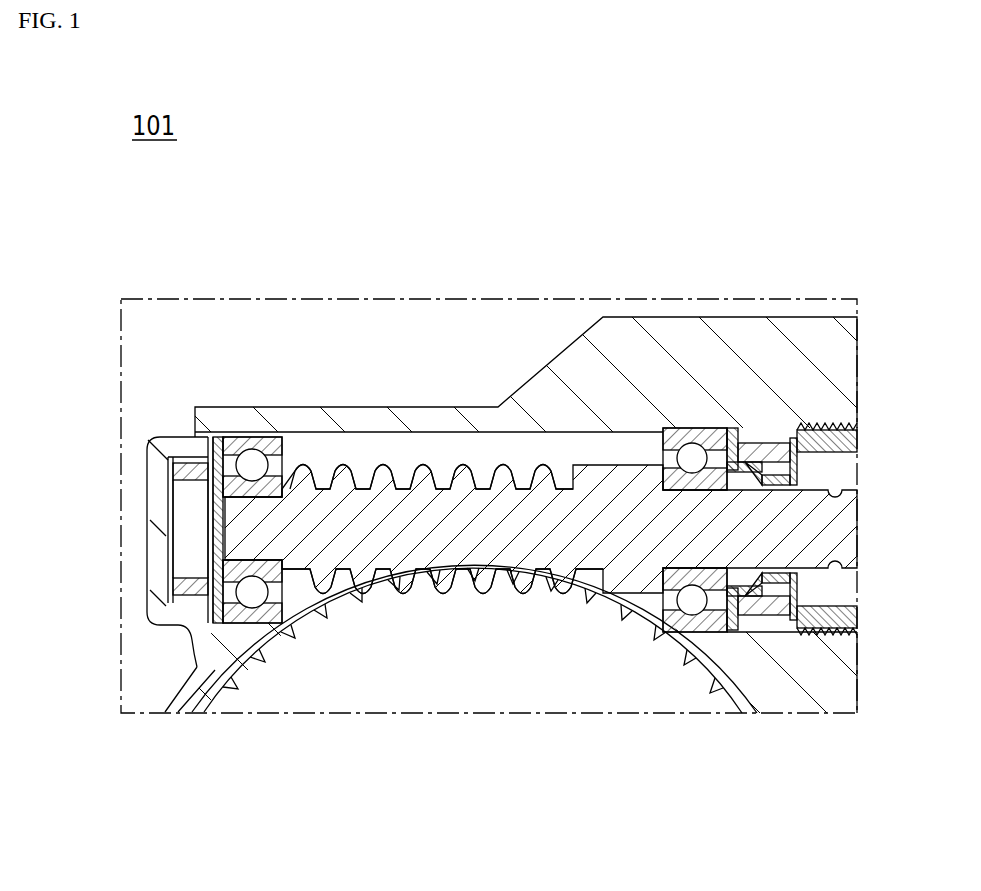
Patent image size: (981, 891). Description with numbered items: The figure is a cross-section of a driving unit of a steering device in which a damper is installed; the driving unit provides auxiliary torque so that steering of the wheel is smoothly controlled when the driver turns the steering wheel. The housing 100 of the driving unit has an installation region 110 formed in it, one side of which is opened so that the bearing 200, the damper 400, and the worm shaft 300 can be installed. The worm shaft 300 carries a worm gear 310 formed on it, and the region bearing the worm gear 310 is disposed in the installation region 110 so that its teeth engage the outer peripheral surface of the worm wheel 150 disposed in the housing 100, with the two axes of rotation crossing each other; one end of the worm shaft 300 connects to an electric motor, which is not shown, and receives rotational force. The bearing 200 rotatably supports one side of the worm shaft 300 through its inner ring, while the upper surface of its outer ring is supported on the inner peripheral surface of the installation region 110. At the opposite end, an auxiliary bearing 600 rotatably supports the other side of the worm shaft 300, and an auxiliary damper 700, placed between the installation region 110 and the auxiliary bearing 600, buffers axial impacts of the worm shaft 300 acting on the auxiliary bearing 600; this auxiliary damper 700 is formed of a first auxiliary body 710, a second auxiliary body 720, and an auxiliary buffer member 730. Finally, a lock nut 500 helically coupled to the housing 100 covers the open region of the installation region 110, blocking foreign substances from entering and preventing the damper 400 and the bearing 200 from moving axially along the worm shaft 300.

The housing of the driving unit 100 is at (617, 343).
The installation region 110 is at (412, 447).
The worm wheel 150 is at (400, 690).
The bearing 200 is at (690, 438).
The worm shaft 300 is at (590, 553).
The worm gear 310 is at (471, 570).
The damper 400 is at (760, 430).
The lock nut 500 is at (857, 436).
The auxiliary bearing 600 is at (252, 449).
The auxiliary damper 700 is at (196, 450).
The first auxiliary body 710 is at (215, 492).
The second auxiliary body 720 is at (170, 467).
The auxiliary buffer member 730 is at (190, 490).